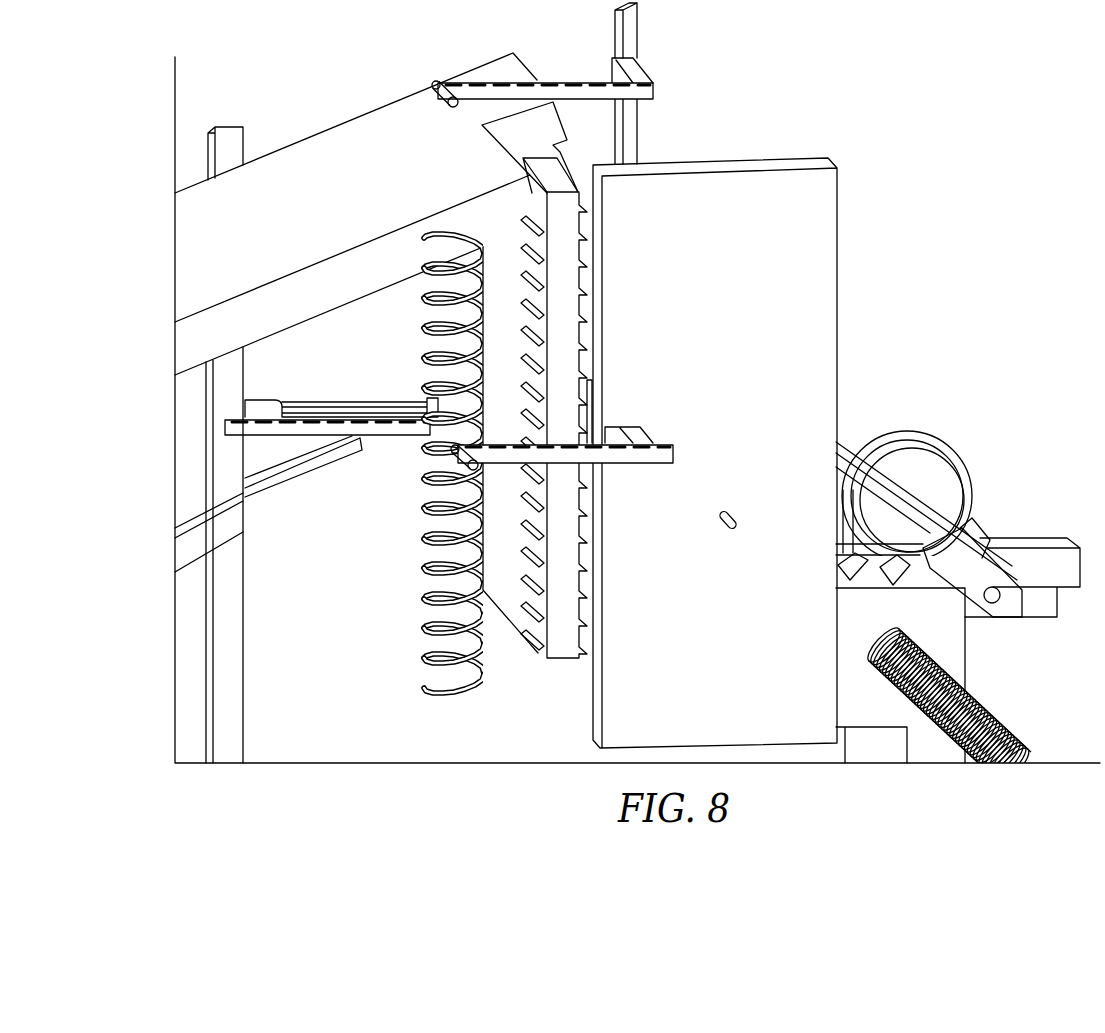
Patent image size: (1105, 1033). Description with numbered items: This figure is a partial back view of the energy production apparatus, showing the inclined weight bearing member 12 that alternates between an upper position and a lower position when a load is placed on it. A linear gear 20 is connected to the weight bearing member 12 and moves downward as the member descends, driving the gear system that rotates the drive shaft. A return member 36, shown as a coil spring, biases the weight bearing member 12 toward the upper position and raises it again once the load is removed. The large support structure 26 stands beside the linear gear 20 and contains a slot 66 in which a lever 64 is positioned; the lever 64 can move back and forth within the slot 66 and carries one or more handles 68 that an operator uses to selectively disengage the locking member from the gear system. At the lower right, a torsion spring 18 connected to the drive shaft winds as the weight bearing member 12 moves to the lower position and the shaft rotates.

The weight bearing member 12 is at (338, 125).
The torsion spring 18 is at (973, 700).
The linear gear 20 is at (528, 640).
The support structure 26 is at (815, 160).
The return member 36 is at (425, 595).
The lever 64 is at (640, 66).
The slot 66 is at (612, 427).
The handle 68 is at (433, 82).